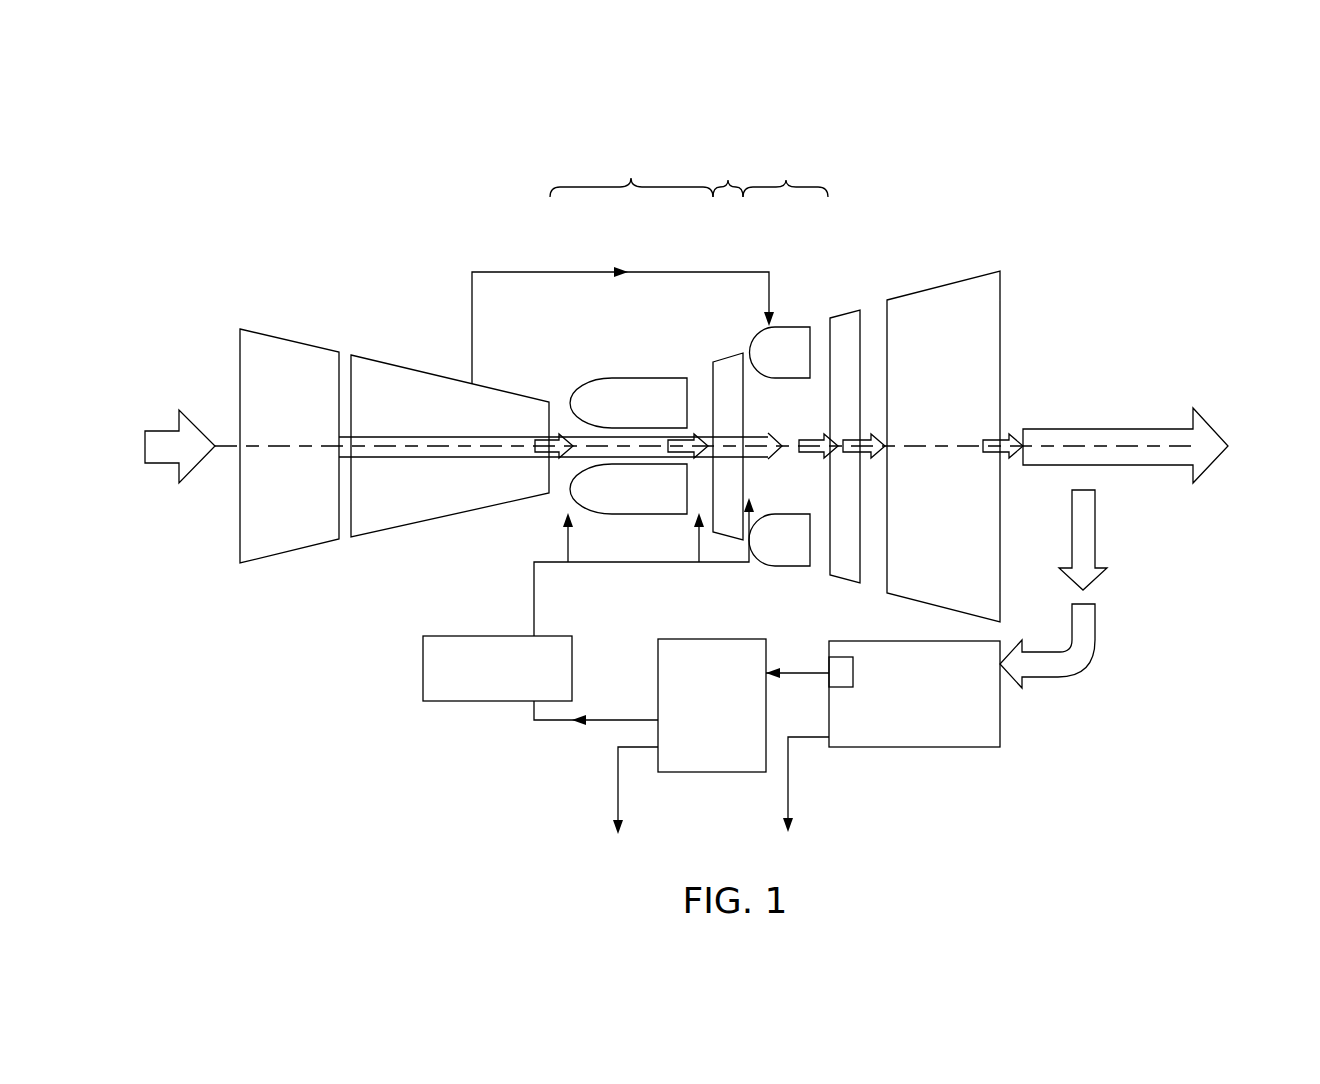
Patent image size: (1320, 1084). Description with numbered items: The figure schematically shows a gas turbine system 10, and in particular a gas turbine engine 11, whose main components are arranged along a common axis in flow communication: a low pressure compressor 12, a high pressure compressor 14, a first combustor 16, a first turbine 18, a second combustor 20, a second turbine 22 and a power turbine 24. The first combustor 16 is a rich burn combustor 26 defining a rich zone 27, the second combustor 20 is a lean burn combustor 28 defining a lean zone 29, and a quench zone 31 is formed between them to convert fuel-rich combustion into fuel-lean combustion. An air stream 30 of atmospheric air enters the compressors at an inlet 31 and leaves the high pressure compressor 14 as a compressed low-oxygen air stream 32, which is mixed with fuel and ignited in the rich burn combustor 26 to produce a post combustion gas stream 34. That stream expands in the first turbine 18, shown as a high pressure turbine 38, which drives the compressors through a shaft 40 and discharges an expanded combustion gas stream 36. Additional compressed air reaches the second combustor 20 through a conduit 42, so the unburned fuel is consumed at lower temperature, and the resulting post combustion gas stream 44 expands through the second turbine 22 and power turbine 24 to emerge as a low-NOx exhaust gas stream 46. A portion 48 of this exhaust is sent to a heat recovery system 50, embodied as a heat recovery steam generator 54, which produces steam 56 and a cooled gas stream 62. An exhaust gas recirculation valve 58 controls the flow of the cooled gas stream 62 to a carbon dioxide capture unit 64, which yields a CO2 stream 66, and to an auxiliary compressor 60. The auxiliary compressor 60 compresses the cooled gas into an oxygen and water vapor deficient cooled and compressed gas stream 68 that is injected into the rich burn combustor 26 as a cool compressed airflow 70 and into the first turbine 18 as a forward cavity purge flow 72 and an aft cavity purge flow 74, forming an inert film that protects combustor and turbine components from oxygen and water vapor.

The gas turbine system 10 is at (307, 132).
The gas turbine engine 11 is at (372, 257).
The low pressure compressor 12 is at (278, 555).
The high pressure compressor 14 is at (400, 527).
The first combustor 16 is at (632, 378).
The first turbine 18 is at (722, 358).
The second combustor 20 is at (800, 327).
The second turbine 22 is at (845, 582).
The power turbine 24 is at (946, 285).
The rich burn combustor 26 is at (583, 390).
The rich zone 27 is at (631, 178).
The lean burn combustor 28 is at (760, 336).
The lean zone 29 is at (786, 180).
The air stream 30 is at (162, 430).
The quench zone 31 is at (225, 412).
The compressed low-oxygen air stream 32 is at (538, 454).
The post combustion gas stream 34 is at (701, 435).
The expanded combustion gas stream 36 is at (779, 459).
The high pressure turbine 38 is at (730, 537).
The shaft 40 is at (385, 458).
The conduit 42 is at (567, 272).
The post combustion gas stream 44 is at (800, 440).
The low-NOx exhaust gas stream 46 is at (1089, 429).
The portion of exhaust gas stream 48 is at (1097, 626).
The heat recovery system 50 is at (936, 748).
The heat recovery steam generator 54 is at (1001, 715).
The steam 56 is at (790, 797).
The exhaust gas recirculation valve 58 is at (829, 660).
The auxiliary compressor 60 is at (488, 702).
The cooled gas stream 62 is at (620, 720).
The carbon dioxide capture unit 64 is at (711, 773).
The CO2 stream 66 is at (617, 791).
The oxygen and water vapor deficient cooled and compressed gas stream 68 is at (535, 608).
The cool compressed airflow 70 is at (566, 539).
The forward cavity purge flow 72 is at (697, 539).
The aft cavity purge flow 74 is at (751, 563).